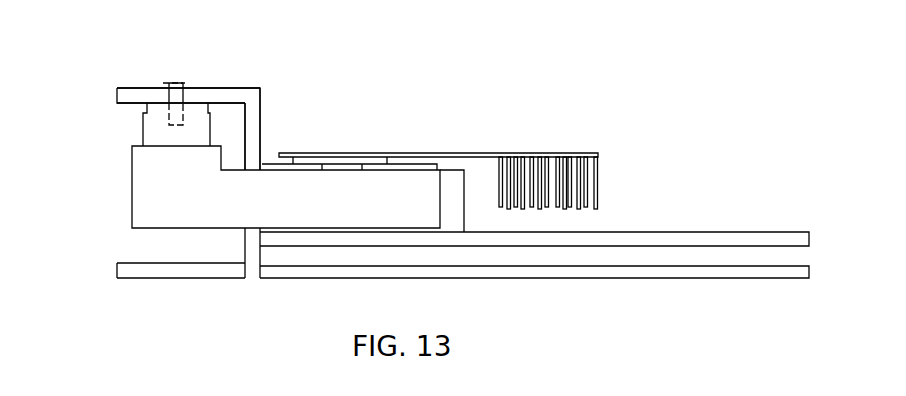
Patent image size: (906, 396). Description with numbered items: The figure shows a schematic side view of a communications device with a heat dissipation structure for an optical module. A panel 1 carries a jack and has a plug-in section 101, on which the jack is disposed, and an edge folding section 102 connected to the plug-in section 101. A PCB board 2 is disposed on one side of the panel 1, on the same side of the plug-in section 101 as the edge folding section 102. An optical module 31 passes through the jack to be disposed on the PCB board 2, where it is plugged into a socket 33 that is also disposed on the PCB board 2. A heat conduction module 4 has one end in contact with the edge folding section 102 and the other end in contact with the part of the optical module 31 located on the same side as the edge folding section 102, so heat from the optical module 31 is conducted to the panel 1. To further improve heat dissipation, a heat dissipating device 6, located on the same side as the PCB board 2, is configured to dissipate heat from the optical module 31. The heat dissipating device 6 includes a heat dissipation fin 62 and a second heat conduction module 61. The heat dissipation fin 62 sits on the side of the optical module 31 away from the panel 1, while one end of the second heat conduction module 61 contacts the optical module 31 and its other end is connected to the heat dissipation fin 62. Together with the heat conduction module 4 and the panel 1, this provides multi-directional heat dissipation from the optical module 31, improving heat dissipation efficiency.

The panel 1 is at (278, 79).
The plug-in section 101 is at (266, 120).
The edge folding section 102 is at (200, 80).
The PCB board 2 is at (603, 233).
The optical module 31 is at (143, 226).
The socket 33 is at (455, 180).
The heat conduction module 4 is at (120, 136).
The heat dissipating device 6 is at (555, 119).
The second heat conduction module 61 is at (534, 144).
The heat dissipation fin 62 is at (563, 166).